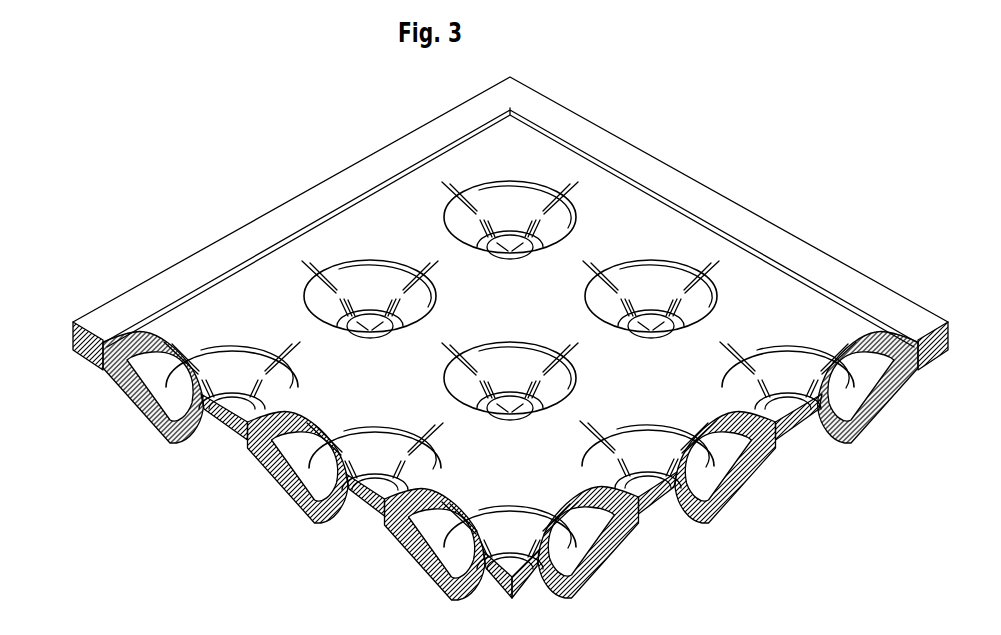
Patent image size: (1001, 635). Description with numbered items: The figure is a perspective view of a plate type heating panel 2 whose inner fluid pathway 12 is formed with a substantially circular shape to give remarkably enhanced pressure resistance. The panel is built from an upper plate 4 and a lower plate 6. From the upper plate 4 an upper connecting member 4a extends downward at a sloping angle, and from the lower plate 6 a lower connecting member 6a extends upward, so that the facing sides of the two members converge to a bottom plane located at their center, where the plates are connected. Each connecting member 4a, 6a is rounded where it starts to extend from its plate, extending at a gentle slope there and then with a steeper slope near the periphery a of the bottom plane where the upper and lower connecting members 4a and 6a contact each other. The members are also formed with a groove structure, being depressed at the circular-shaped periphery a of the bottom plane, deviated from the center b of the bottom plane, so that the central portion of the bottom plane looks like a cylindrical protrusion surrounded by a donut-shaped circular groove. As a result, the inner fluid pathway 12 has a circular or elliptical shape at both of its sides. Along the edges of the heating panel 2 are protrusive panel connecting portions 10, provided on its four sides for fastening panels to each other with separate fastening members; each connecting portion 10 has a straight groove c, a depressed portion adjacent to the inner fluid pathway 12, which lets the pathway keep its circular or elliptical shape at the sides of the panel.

The heating panel 2 is at (848, 188).
The upper plate 4 is at (796, 300).
The upper connecting member 4a is at (322, 472).
The lower plate 6 is at (869, 433).
The lower connecting member 6a is at (638, 519).
The protrusive panel connecting portion 10 is at (652, 167).
The inner fluid pathway 12 is at (724, 467).
The periphery of the bottom plane a is at (243, 397).
The center of the bottom plane b is at (252, 393).
The straight groove c is at (110, 340).